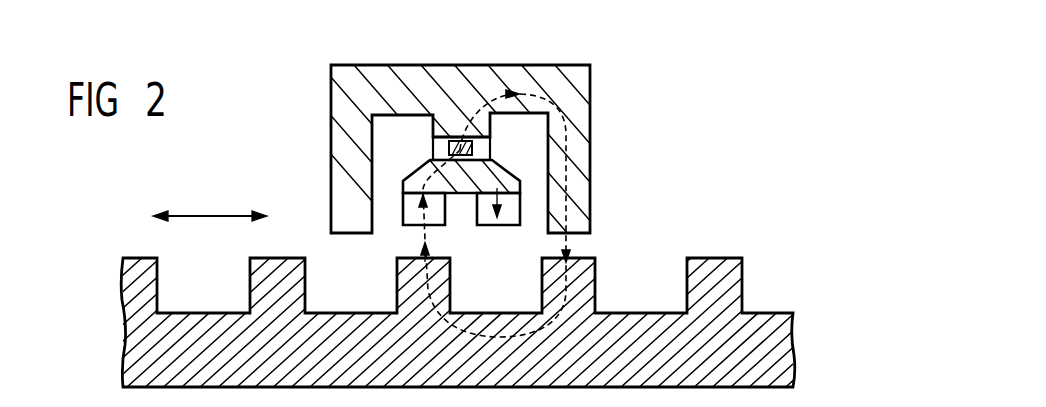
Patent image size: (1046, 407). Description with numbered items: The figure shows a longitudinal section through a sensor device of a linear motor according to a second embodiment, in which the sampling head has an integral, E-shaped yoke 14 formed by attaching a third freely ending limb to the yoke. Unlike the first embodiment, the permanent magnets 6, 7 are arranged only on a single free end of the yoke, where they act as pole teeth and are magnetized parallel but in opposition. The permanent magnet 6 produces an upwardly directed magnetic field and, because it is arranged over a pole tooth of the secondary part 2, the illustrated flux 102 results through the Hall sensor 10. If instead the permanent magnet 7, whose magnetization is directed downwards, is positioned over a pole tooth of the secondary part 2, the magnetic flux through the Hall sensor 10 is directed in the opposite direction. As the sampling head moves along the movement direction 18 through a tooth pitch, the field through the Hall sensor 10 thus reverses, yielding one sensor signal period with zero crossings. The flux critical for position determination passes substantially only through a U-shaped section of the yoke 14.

The secondary part 2 is at (613, 288).
The permanent magnet 6 is at (408, 211).
The permanent magnet 7 is at (484, 224).
The Hall sensor 10 is at (457, 150).
The E-shaped yoke 14 is at (583, 82).
The movement direction 18 is at (211, 214).
The flux 102 is at (565, 157).